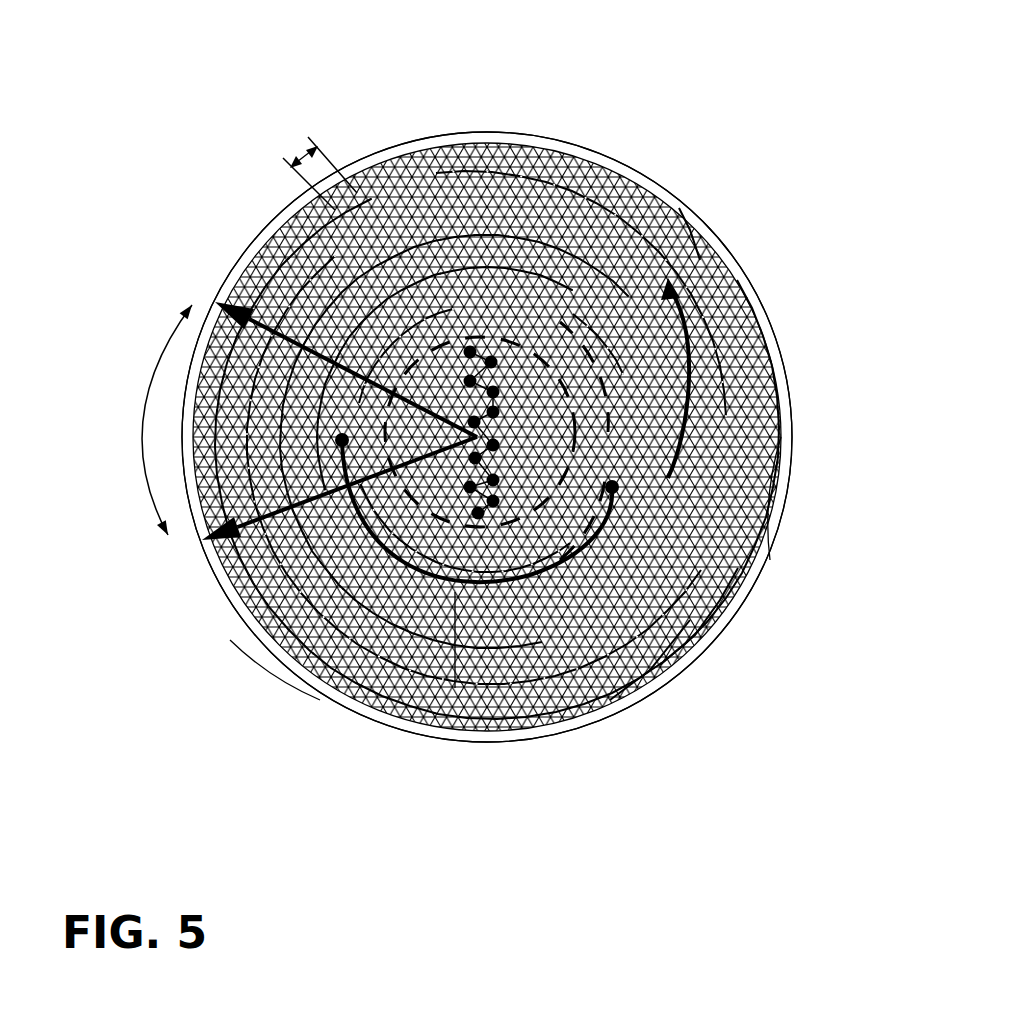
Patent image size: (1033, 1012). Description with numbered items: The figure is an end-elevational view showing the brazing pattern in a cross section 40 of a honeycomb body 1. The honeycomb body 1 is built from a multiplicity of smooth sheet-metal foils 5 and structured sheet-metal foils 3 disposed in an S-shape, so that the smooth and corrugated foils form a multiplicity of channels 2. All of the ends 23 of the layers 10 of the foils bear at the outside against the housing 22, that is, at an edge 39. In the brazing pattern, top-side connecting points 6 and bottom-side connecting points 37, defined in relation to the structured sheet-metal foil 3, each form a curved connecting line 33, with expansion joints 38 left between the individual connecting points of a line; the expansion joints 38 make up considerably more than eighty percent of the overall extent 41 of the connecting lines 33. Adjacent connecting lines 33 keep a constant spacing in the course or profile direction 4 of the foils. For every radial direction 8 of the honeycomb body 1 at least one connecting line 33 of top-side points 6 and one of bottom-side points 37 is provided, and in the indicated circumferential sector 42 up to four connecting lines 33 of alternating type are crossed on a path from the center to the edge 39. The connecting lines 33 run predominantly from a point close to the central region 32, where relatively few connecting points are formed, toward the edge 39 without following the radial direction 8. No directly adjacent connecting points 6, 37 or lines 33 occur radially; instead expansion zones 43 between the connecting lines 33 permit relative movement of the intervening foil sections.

The honeycomb body 1 is at (226, 181).
The channels 2 is at (738, 570).
The structured sheet-metal foil 3 is at (600, 195).
The course or profile direction 4 is at (700, 275).
The smooth sheet-metal foil 5 is at (633, 187).
The top-side connecting points 6 is at (718, 403).
The radial direction 8 is at (218, 298).
The layers 10 is at (680, 207).
The housing 22 is at (407, 147).
The ends 23 is at (540, 143).
The central region 32 is at (333, 575).
The curved connecting line 33 is at (612, 713).
The bottom-side connecting points 37 is at (760, 332).
The expansion joints 38 is at (298, 155).
The edge 39 is at (790, 510).
The cross section 40 is at (258, 707).
The overall extent 41 is at (455, 688).
The circumferential sector 42 is at (143, 415).
The expansion zones 43 is at (690, 620).